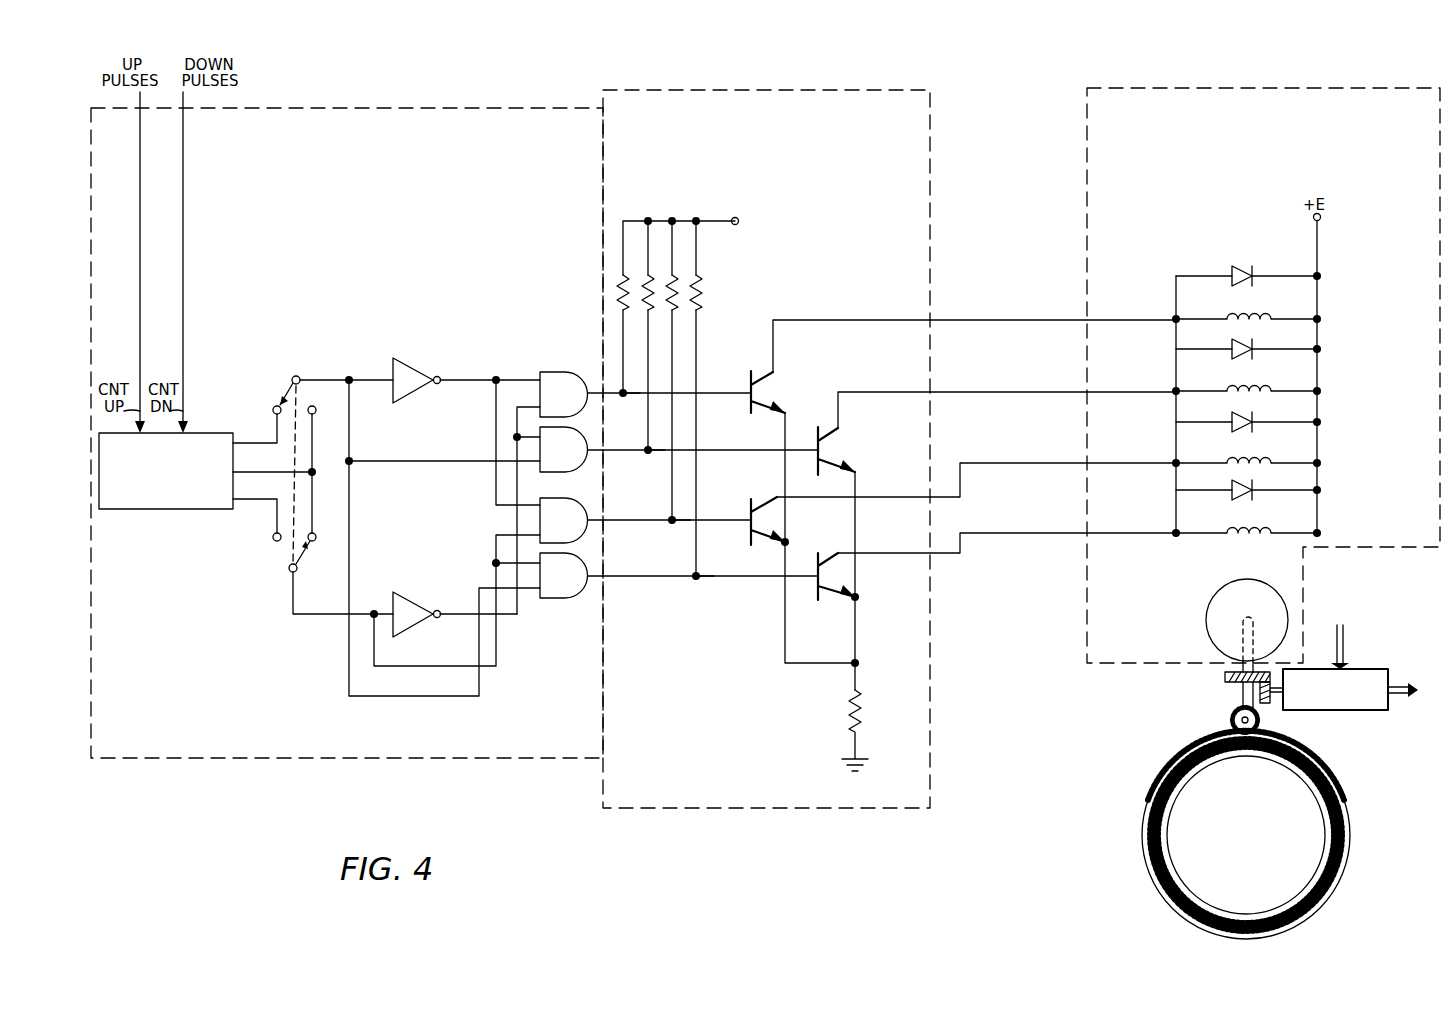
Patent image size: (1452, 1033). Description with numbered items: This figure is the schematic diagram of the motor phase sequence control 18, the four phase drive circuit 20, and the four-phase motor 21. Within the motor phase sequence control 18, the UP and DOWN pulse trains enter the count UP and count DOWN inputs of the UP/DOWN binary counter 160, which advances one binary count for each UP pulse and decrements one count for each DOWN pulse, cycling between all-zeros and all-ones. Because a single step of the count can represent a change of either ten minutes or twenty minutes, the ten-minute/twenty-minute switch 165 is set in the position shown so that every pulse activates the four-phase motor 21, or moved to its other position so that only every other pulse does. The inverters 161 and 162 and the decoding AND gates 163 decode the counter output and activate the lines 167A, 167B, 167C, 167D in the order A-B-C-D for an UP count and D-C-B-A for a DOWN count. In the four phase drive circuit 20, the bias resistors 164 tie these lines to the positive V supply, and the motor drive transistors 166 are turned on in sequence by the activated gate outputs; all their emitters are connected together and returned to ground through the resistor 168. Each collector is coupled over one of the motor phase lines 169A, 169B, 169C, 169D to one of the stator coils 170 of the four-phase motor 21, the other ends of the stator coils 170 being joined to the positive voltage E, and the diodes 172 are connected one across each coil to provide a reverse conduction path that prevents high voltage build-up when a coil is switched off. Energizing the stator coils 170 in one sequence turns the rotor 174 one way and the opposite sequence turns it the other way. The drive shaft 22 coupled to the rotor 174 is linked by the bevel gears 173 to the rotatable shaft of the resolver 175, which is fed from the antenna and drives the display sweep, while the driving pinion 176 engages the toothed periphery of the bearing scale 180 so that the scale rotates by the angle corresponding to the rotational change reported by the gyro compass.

The motor phase sequence control 18 is at (455, 108).
The four phase drive circuit 20 is at (645, 88).
The four-phase motor 21 is at (1215, 88).
The drive shaft 22 is at (1240, 674).
The UP/DOWN binary counter 160 is at (163, 512).
The inverter 161 is at (408, 366).
The inverter 162 is at (418, 606).
The decoding AND gates 163 is at (540, 580).
The bias resistors 164 is at (700, 275).
The 10'/20' switch 165 is at (285, 390).
The motor drive transistors 166 is at (778, 624).
The line 167A is at (640, 398).
The line 167B is at (650, 456).
The line 167C is at (672, 526).
The line 167D is at (674, 580).
The resistor 168 is at (848, 710).
The motor phase line 169A is at (974, 346).
The motor phase line 169B is at (1007, 410).
The motor phase line 169C is at (976, 480).
The motor phase line 169D is at (1007, 547).
The stator coils 170 is at (1258, 530).
The diodes 172 is at (1230, 344).
The bevel gears 173 is at (1290, 720).
The rotor 174 is at (1212, 612).
The resolver 175 is at (1360, 710).
The driving pinion gear 176 is at (1233, 728).
The bearing scale 180 is at (1158, 840).